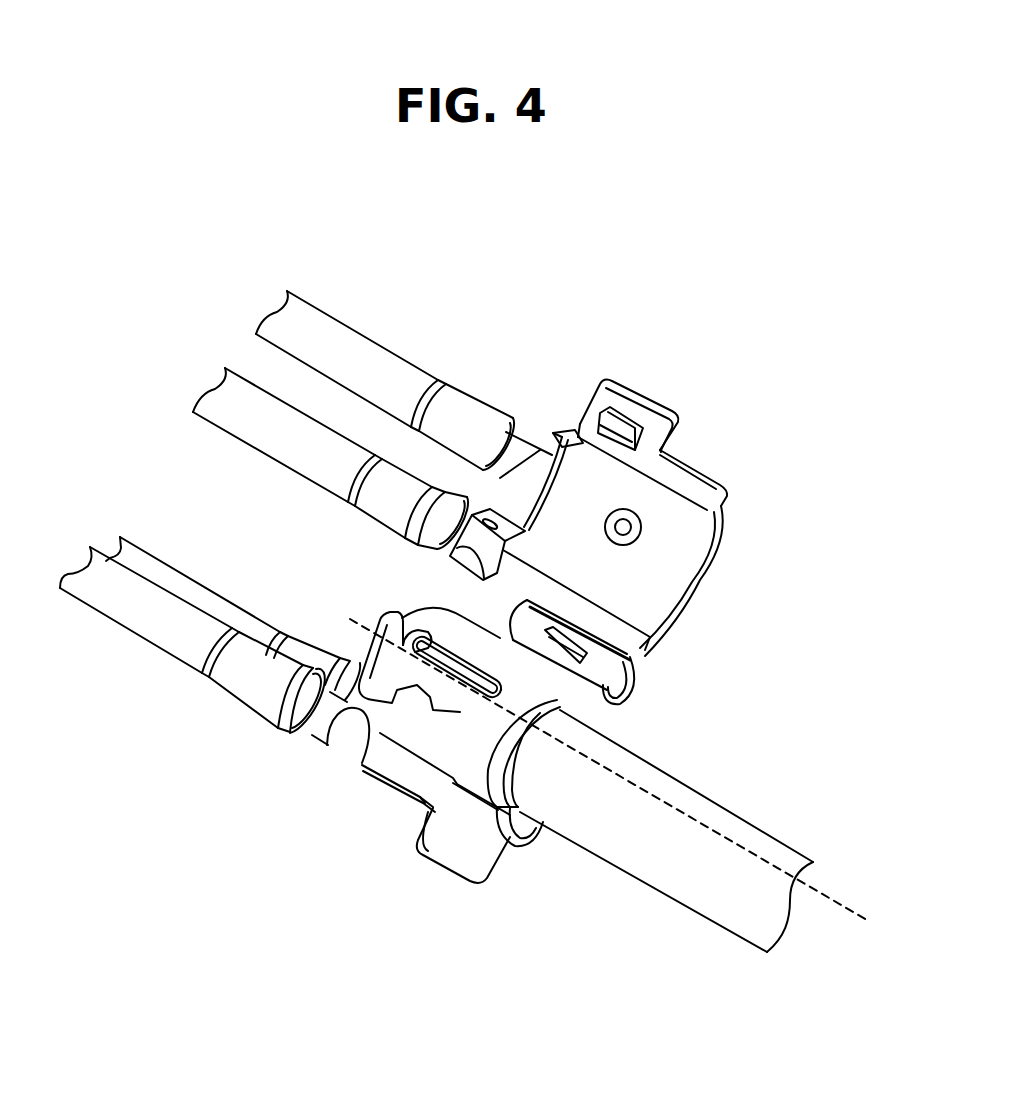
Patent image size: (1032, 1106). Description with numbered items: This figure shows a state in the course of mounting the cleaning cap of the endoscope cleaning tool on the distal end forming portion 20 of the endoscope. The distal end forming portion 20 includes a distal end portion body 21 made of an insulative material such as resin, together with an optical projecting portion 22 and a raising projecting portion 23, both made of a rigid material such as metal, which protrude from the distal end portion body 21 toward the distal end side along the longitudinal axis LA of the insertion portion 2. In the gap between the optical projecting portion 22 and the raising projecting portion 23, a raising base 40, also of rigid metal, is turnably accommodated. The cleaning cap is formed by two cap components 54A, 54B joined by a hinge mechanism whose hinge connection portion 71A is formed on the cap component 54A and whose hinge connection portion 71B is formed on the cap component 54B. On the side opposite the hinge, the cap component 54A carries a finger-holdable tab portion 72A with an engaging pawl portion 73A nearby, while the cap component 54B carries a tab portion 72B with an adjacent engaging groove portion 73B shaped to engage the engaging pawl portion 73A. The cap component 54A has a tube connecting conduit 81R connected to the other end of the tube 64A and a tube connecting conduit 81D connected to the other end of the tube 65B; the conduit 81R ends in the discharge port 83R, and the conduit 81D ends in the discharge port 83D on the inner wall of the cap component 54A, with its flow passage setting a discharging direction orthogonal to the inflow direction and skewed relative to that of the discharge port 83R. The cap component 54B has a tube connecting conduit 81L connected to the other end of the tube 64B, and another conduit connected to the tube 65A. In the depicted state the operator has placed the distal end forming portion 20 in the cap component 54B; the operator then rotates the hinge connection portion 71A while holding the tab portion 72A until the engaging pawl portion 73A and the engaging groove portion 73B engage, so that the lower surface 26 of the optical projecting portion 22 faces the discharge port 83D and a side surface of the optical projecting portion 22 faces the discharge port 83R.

The insertion portion 2 is at (691, 938).
The distal end forming portion 20 is at (437, 775).
The distal end portion body 21 is at (473, 763).
The optical projecting portion 22 is at (429, 642).
The raising projecting portion 23 is at (412, 735).
The lower surface 26 is at (403, 632).
The raising base 40 is at (453, 683).
The cap component 54A is at (679, 549).
The cap component 54B is at (440, 767).
The tube 64A is at (323, 460).
The tube 64B is at (152, 627).
The tube 65A is at (167, 574).
The tube 65B is at (378, 360).
The hinge connection portion 71A is at (623, 681).
The hinge connection portion 71B is at (627, 693).
The tab portion 72A is at (662, 420).
The tab portion 72B is at (453, 850).
The engaging pawl portion 73A is at (618, 428).
The engaging groove portion 73B is at (393, 789).
The tube connecting conduit 81D is at (497, 510).
The tube connecting conduit 81L is at (323, 720).
The tube connecting conduit 81R is at (452, 550).
The discharge port 83D is at (630, 530).
The discharge port 83R is at (545, 462).
The longitudinal axis LA is at (833, 900).